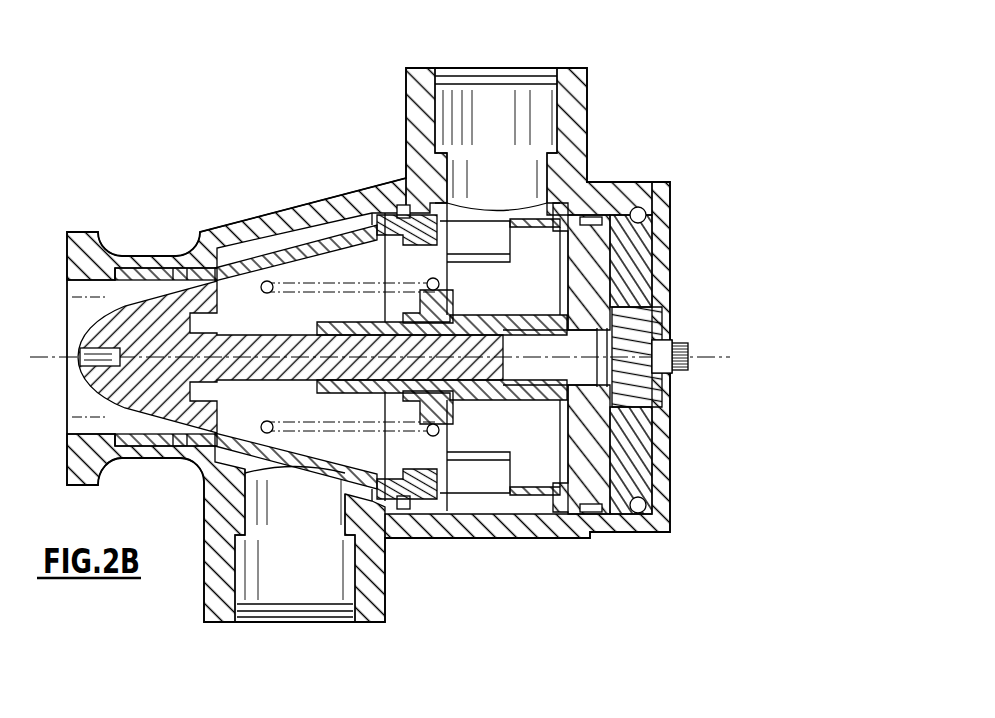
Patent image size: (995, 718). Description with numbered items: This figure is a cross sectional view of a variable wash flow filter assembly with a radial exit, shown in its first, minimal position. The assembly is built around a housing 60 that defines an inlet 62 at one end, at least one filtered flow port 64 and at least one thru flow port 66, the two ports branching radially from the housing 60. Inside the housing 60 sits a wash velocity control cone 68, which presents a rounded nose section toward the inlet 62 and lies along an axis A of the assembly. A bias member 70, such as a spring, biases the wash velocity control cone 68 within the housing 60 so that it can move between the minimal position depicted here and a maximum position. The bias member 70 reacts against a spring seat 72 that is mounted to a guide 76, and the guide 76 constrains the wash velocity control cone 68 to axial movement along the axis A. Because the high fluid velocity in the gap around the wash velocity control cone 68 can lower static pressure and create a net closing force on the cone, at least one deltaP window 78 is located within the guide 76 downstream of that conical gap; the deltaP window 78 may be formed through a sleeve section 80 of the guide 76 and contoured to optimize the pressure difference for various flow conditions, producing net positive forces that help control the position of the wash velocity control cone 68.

The housing 60 is at (230, 226).
The inlet 62 is at (82, 434).
The filtered flow port 64 is at (353, 582).
The thru flow port 66 is at (545, 105).
The wash velocity control cone 68 is at (172, 396).
The bias member 70 is at (337, 287).
The spring seat 72 is at (440, 413).
The guide 76 is at (593, 477).
The deltaP window 78 is at (500, 480).
The sleeve section 80 is at (530, 487).
The axis A is at (638, 357).